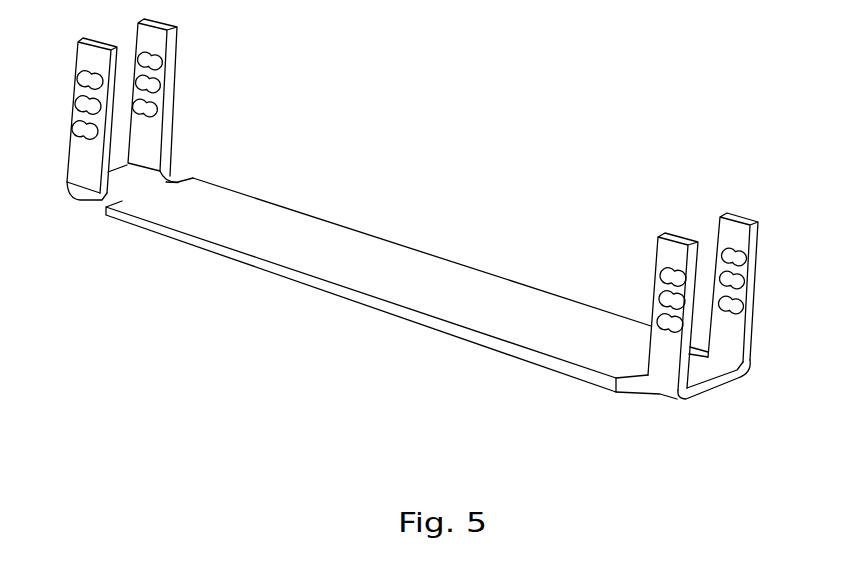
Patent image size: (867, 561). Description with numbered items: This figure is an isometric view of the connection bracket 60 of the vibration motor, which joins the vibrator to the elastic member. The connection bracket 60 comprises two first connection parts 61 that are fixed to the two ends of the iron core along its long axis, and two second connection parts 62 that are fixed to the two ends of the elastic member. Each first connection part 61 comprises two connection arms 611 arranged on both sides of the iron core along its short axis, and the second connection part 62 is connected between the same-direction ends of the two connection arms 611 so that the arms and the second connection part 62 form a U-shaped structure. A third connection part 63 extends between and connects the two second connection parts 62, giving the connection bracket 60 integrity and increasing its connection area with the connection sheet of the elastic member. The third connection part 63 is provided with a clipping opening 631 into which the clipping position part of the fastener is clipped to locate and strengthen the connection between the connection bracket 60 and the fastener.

The connection bracket 60 is at (490, 96).
The first connection part 61 is at (268, 22).
The connection arm 611 is at (112, 78).
The second connection part 62 is at (706, 398).
The third connection part 63 is at (454, 312).
The clipping opening 631 is at (172, 182).